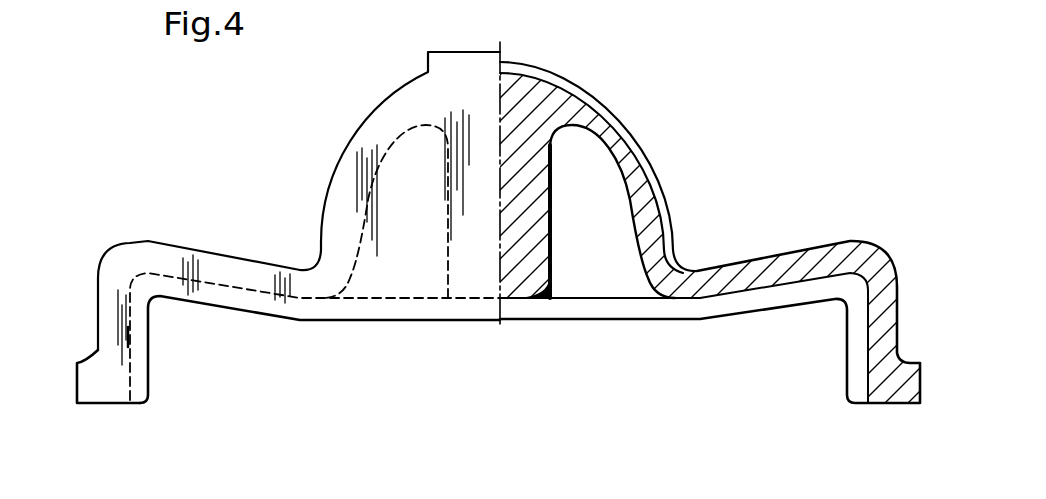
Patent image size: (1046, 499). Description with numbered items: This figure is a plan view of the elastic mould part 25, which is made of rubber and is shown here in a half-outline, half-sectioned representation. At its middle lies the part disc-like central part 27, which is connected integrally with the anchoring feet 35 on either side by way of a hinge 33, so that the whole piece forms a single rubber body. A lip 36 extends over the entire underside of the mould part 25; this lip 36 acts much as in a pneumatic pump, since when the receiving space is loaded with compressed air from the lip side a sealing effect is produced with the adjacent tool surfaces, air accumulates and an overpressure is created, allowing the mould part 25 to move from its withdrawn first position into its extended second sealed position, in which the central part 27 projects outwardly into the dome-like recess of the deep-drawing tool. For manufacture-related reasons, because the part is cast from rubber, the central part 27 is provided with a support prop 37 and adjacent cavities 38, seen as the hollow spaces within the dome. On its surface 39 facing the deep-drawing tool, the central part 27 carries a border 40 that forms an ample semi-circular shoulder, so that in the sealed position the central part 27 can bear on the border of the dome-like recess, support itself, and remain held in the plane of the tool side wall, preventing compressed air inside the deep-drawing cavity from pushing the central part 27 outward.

The elastic mould part 25 is at (703, 179).
The central part 27 is at (545, 90).
The hinge 33 is at (137, 255).
The anchoring feet 35 is at (100, 388).
The lip 36 is at (138, 333).
The support prop 37 is at (533, 290).
The cavities 38 is at (411, 214).
The surface 39 is at (372, 108).
The border 40 is at (650, 157).